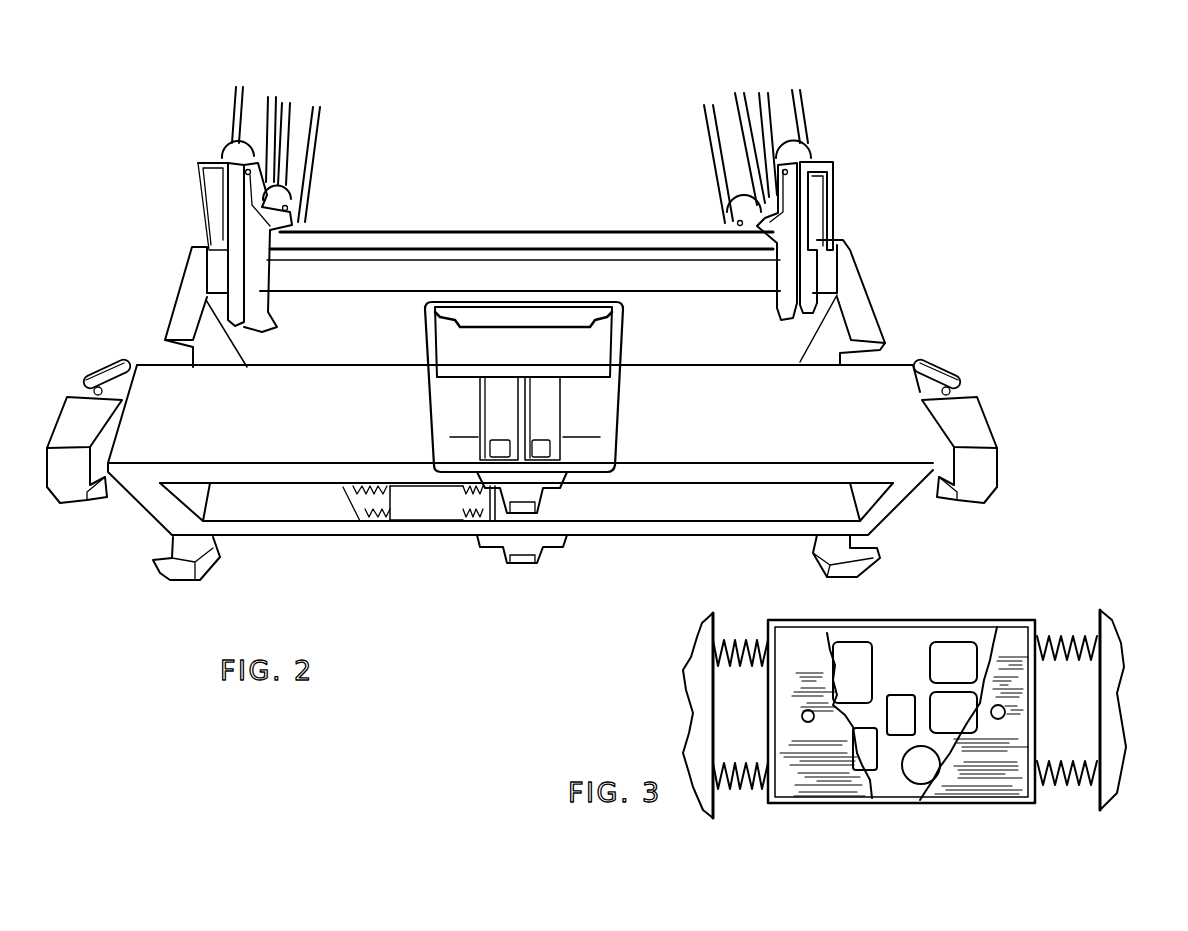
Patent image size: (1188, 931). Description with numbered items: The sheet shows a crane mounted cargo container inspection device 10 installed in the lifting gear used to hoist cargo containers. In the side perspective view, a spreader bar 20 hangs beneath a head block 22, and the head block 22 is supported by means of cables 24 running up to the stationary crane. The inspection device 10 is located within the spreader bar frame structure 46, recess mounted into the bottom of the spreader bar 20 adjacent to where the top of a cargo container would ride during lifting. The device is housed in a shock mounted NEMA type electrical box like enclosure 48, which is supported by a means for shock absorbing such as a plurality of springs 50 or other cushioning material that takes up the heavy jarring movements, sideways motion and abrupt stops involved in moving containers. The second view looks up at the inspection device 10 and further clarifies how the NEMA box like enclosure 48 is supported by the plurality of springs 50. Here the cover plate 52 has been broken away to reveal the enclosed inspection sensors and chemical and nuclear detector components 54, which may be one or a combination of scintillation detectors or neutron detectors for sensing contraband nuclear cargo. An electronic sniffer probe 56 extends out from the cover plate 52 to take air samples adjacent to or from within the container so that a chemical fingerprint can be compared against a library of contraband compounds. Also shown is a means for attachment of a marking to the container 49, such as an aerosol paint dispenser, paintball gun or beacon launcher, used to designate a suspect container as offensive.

In FIG. 2, the crane mounted cargo container inspection device 10 is at (406, 552).
In FIG. 3, the crane mounted cargo container inspection device 10 is at (1020, 588).
In FIG. 2, the spreader bar 20 is at (272, 423).
In FIG. 2, the head block 22 is at (877, 307).
In FIG. 2, the cables 24 is at (306, 169).
In FIG. 2, the spreader bar frame structure 46 is at (287, 475).
In FIG. 2, the NEMA box like enclosure 48 is at (422, 510).
In FIG. 3, the NEMA box like enclosure 48 is at (903, 803).
In FIG. 3, the means for attachment of a marking to the container 49 is at (1005, 714).
In FIG. 2, the springs 50 is at (380, 537).
In FIG. 3, the springs 50 is at (733, 638).
In FIG. 3, the cover plate 52 is at (822, 787).
In FIG. 3, the chemical and nuclear detector components 54 is at (857, 657).
In FIG. 3, the electronic sniffer probe 56 is at (803, 717).